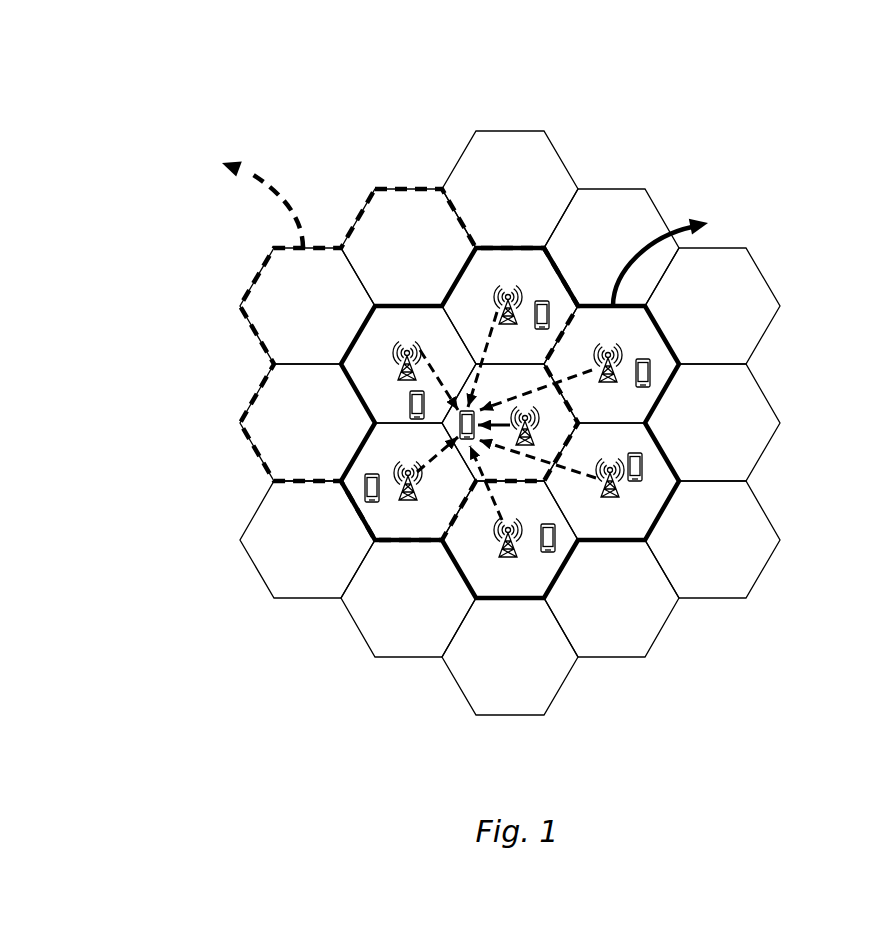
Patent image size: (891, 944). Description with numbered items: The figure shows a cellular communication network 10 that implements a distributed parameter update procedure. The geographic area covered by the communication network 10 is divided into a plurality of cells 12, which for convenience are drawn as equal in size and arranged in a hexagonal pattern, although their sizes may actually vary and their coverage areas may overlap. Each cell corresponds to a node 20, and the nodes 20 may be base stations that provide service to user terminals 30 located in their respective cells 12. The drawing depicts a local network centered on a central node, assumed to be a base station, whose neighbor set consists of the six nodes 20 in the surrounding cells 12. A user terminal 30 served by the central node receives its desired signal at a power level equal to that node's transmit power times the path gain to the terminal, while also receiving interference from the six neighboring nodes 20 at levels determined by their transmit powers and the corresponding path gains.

The cellular communication network 10 is at (740, 96).
The cell 12 is at (762, 280).
The node 20 is at (548, 300).
The user terminal 30 is at (550, 553).